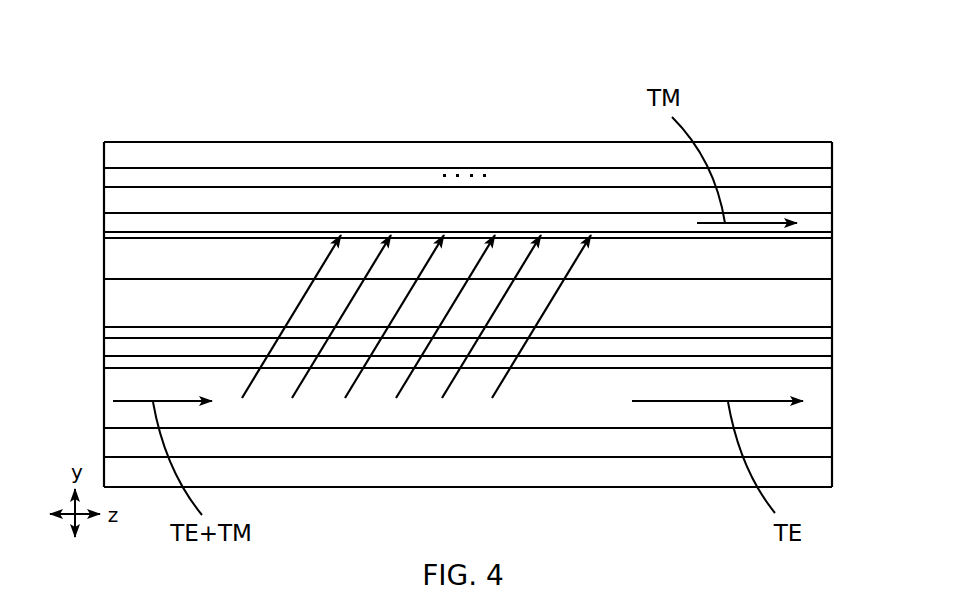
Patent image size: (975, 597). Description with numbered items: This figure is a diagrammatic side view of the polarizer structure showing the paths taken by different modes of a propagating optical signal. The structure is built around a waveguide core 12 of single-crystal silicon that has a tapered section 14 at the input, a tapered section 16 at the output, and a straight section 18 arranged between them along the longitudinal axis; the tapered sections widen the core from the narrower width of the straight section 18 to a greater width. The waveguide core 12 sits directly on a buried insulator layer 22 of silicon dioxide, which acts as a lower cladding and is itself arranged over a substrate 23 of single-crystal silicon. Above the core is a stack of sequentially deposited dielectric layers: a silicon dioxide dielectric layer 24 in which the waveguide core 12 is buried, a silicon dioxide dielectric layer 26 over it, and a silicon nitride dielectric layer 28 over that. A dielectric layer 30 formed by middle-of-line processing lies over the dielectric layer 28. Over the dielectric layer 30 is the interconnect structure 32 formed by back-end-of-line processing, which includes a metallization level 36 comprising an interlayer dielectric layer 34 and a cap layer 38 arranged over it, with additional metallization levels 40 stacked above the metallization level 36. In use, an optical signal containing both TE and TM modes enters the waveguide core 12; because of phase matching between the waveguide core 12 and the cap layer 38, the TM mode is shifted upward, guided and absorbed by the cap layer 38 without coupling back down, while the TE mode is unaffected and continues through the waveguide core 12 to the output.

The waveguide core 12 is at (815, 400).
The tapered section 14 is at (112, 105).
The tapered section 16 is at (728, 105).
The straight section 18 is at (728, 72).
The buried insulator layer 22 is at (117, 445).
The substrate 23 is at (815, 473).
The dielectric layer 24 is at (117, 362).
The dielectric layer 26 is at (815, 348).
The dielectric layer 28 is at (117, 333).
The dielectric layer 30 is at (815, 305).
The interconnect structure 32 is at (835, 158).
The interlayer dielectric layer 34 is at (815, 262).
The metallization level 36 is at (79, 213).
The cap layer 38 is at (815, 223).
The additional metallization levels 40 is at (79, 142).